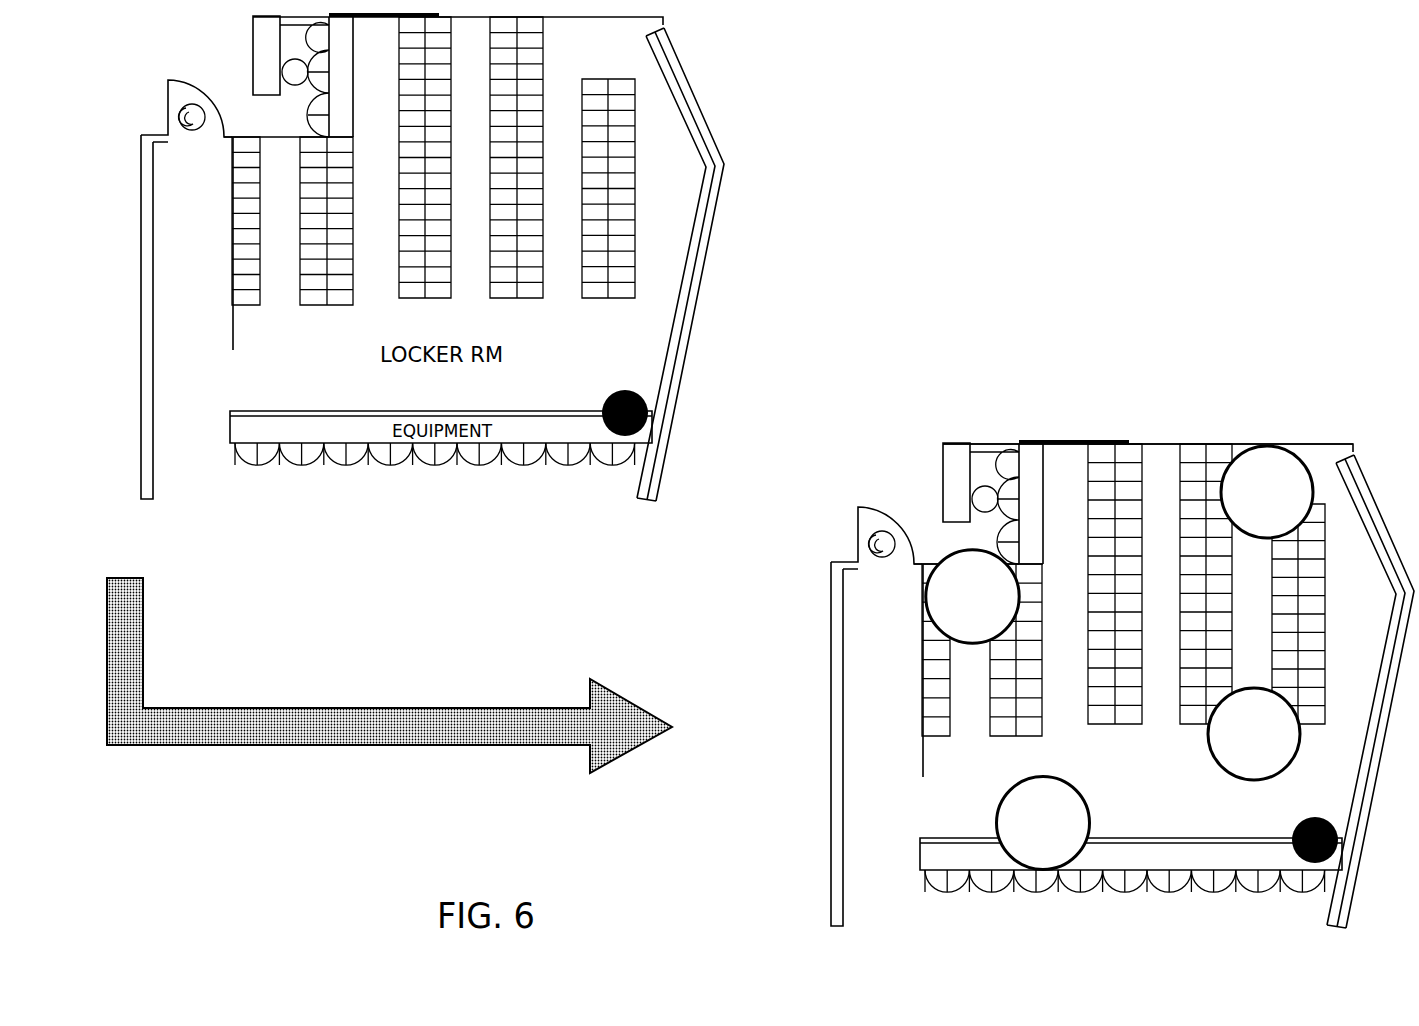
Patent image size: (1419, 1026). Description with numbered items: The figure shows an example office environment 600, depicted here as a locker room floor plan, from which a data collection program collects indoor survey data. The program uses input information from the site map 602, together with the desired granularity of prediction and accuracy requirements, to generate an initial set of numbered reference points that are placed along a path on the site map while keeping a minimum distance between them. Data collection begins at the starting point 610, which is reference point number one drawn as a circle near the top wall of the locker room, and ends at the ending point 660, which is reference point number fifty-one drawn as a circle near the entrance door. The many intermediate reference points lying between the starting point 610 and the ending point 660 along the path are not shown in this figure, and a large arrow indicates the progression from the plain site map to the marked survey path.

The office environment 600 is at (1143, 507).
The site map 602 is at (178, 76).
The starting point 610 is at (1283, 440).
The ending point 660 is at (955, 565).